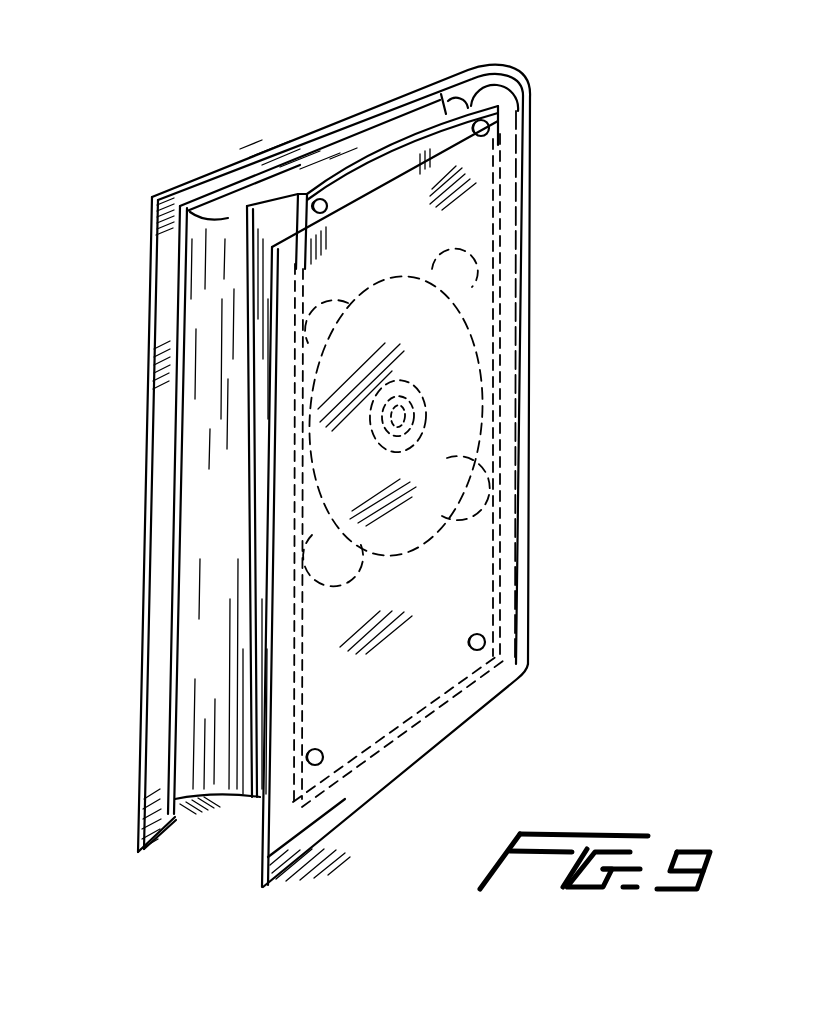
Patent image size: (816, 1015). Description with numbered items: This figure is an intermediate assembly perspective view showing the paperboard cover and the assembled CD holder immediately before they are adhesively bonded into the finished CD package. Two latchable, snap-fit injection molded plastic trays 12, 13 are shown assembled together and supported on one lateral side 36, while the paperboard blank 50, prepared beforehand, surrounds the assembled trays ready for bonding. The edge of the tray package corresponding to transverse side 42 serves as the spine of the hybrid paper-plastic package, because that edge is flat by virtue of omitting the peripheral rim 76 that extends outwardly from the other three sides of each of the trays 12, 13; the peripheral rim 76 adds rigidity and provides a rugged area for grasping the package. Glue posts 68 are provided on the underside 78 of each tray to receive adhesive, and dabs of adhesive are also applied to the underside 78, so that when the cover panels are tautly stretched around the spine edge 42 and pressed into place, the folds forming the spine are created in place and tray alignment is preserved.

The injection molded plastic tray 12 is at (203, 410).
The injection molded plastic tray 13 is at (250, 663).
The lateral side 36 is at (253, 800).
The transverse side 42 is at (438, 100).
The paperboard blank 50 is at (148, 456).
The glue post 68 is at (326, 211).
The peripheral rim 76 is at (287, 160).
The underside 78 is at (437, 452).